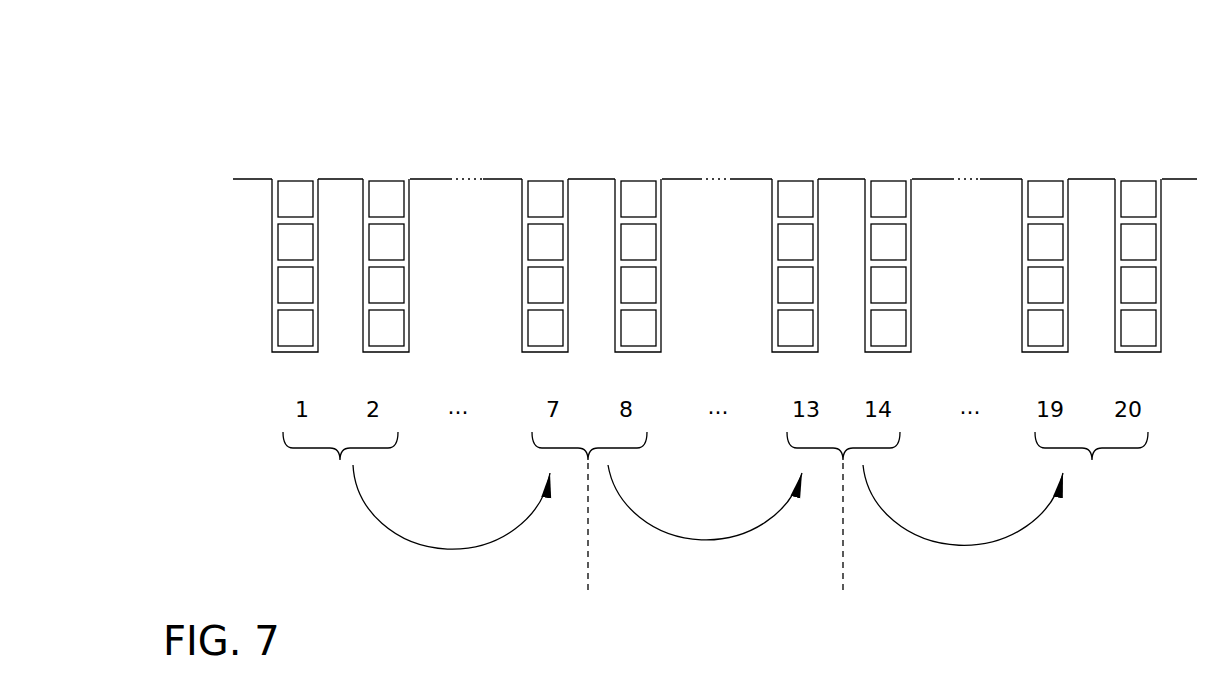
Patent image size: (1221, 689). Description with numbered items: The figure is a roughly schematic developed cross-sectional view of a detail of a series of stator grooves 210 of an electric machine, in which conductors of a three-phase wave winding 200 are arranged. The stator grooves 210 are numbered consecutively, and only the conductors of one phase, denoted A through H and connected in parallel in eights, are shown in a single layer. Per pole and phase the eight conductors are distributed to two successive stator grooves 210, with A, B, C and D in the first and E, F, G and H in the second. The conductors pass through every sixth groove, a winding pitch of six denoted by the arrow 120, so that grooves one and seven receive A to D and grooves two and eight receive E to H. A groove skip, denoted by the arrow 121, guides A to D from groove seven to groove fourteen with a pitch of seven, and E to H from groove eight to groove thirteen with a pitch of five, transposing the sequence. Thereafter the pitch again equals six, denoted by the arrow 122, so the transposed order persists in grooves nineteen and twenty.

The wave winding 200 is at (338, 140).
The stator grooves 210 is at (900, 170).
The arrow 120 is at (451, 528).
The arrow 121 is at (705, 528).
The arrow 122 is at (963, 528).